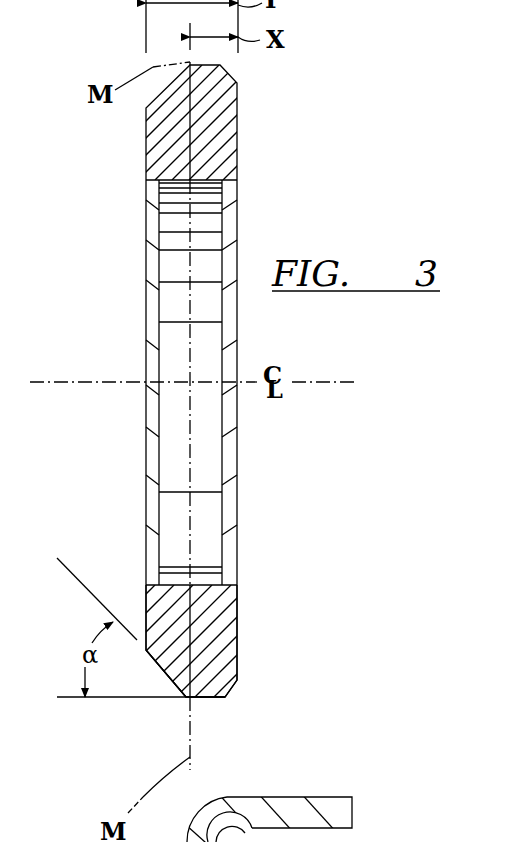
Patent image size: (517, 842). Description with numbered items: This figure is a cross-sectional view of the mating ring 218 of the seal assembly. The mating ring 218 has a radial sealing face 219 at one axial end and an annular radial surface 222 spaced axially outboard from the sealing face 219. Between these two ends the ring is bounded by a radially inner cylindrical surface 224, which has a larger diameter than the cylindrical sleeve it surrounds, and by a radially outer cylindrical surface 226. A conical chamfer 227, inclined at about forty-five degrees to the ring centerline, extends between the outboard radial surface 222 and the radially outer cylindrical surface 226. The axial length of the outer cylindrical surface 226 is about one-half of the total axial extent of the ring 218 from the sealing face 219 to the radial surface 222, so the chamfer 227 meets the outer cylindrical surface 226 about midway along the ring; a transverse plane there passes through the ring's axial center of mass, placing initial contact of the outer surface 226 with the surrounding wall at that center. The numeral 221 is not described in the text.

The mating ring 218 is at (215, 138).
The radial sealing face 219 is at (237, 618).
The bracket member 221 is at (516, 618).
The annular radial surface 222 is at (143, 610).
The radially inner cylindrical surface 224 is at (197, 567).
The radially outer cylindrical surface 226 is at (205, 698).
The conical chamfer 227 is at (163, 697).